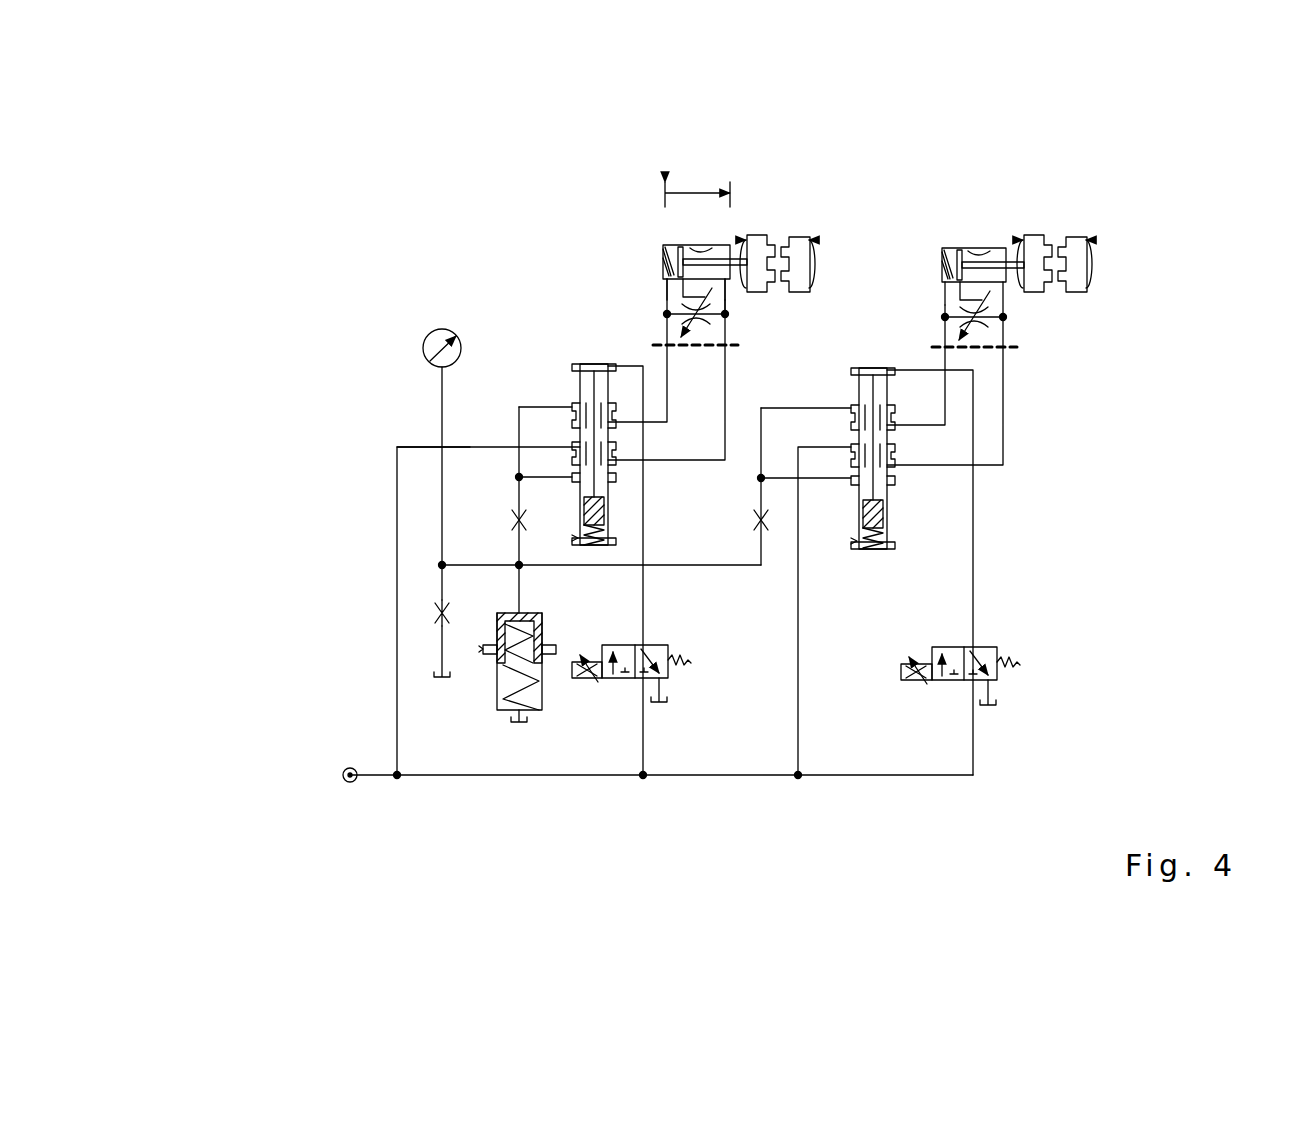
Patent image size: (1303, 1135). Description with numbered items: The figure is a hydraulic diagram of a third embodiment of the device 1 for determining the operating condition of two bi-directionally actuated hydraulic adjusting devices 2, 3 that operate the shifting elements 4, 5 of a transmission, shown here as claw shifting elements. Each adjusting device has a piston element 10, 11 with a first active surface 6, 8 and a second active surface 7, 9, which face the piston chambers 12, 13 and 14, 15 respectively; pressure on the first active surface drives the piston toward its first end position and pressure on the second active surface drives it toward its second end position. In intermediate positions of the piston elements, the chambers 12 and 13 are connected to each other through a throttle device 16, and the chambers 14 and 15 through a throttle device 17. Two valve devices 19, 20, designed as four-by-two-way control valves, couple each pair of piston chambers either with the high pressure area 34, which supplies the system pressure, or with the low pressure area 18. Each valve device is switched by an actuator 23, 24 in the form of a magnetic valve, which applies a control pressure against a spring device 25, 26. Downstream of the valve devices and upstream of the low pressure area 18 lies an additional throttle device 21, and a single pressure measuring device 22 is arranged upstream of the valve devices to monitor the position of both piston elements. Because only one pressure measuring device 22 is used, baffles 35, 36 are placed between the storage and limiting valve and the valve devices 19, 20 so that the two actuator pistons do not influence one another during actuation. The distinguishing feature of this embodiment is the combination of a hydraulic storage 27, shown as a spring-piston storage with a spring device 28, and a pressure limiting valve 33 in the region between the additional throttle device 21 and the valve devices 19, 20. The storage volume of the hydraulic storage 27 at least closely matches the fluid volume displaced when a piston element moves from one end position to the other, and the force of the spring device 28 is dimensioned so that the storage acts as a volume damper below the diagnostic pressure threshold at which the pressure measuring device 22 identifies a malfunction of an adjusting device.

The device 1 is at (372, 302).
The adjusting device 2 is at (630, 226).
The adjusting device 3 is at (935, 262).
The shifting element 4 is at (798, 213).
The shifting element 5 is at (1106, 230).
The first active surface 6 is at (670, 260).
The second active surface 7 is at (752, 243).
The first active surface 8 is at (945, 250).
The second active surface 9 is at (998, 256).
The piston element 10 is at (690, 246).
The piston element 11 is at (965, 294).
The piston chamber 12 is at (675, 256).
The piston chamber 13 is at (727, 283).
The piston chamber 14 is at (945, 263).
The piston chamber 15 is at (1017, 238).
The throttle device 16 is at (655, 313).
The throttle device 17 is at (1022, 331).
The low pressure area 18 is at (440, 690).
The valve device 19 is at (560, 386).
The valve device 20 is at (922, 450).
The additional throttle device 21 is at (430, 613).
The pressure measuring device 22 is at (424, 346).
The actuator 23 is at (663, 716).
The actuator 24 is at (1002, 700).
The spring device 25 is at (583, 508).
The spring device 26 is at (887, 513).
The hydraulic storage 27 is at (520, 735).
The spring device 28 is at (535, 688).
The pressure limiting valve 33 is at (479, 659).
The high pressure area 34 is at (342, 772).
The baffle 35 is at (506, 520).
The baffle 36 is at (775, 535).